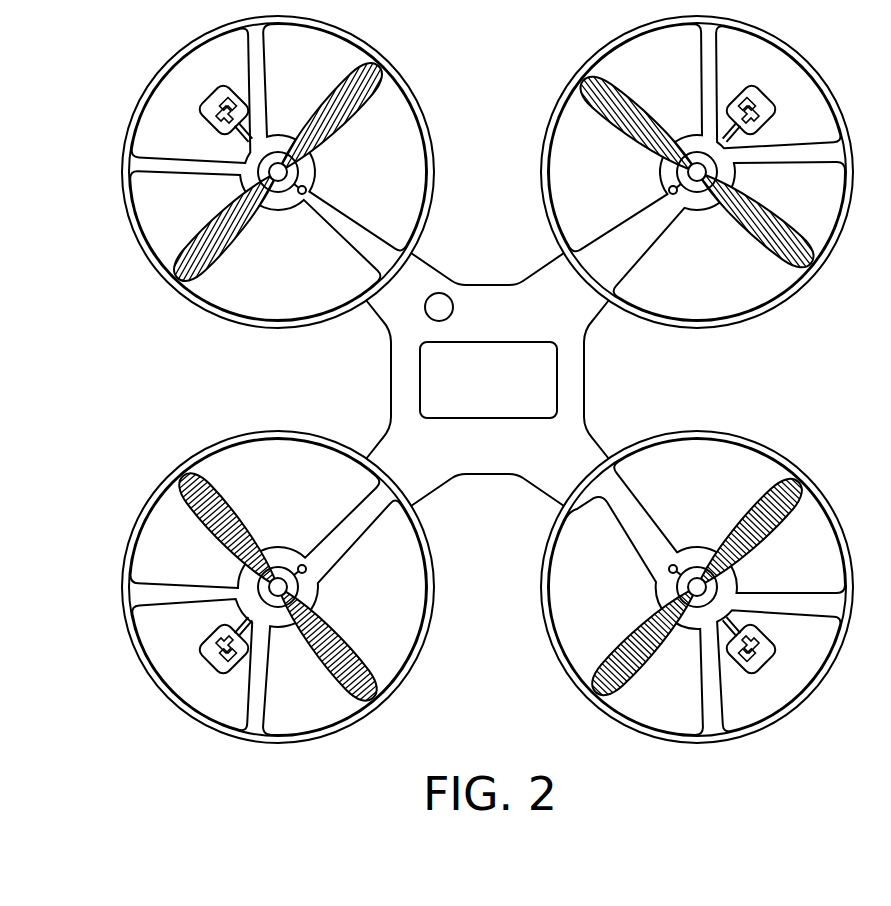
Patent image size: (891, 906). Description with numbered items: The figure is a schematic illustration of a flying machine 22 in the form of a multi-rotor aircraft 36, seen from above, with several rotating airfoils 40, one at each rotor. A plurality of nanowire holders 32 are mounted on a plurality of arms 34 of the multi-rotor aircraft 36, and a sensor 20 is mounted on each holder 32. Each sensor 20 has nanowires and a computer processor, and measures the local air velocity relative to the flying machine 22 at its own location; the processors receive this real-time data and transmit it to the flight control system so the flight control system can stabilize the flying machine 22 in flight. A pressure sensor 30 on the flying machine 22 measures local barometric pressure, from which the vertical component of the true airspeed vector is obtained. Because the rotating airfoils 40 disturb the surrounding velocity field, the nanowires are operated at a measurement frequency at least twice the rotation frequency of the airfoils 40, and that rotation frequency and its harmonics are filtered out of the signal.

The sensor 20 is at (210, 120).
The flying machine 22 is at (366, 379).
The pressure sensor 30 is at (448, 302).
The nanowire holder 32 is at (234, 180).
The arm 34 is at (387, 241).
The multi-rotor aircraft 36 is at (487, 379).
The rotating airfoil 40 is at (322, 104).